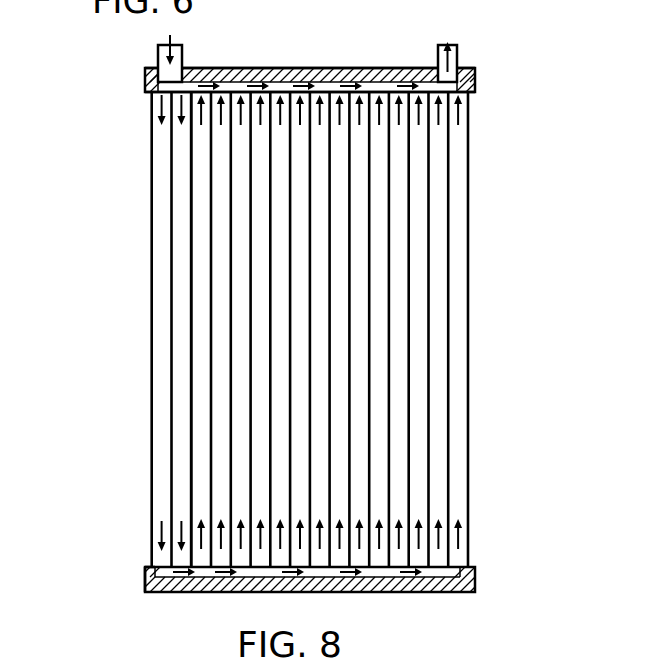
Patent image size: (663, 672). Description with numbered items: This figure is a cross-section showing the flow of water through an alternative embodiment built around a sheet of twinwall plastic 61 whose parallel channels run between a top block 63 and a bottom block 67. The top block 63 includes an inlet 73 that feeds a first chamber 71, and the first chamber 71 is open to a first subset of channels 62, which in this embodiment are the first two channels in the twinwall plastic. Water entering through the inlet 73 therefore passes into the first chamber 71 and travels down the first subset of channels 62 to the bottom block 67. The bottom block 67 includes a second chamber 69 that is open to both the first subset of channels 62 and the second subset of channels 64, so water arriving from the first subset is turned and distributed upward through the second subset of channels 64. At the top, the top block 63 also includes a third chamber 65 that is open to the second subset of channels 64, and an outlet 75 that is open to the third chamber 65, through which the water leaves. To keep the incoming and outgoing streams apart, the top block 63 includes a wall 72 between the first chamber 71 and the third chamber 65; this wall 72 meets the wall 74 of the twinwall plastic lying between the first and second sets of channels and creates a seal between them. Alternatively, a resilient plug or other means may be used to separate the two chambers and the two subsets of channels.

The heat exchanger tube panel 61 is at (454, 184).
The first subset of channels 62 is at (150, 306).
The top block 63 is at (476, 79).
The second subset of channels 64 is at (470, 330).
The third chamber 65 is at (383, 90).
The bottom block 67 is at (476, 575).
The second chamber 69 is at (157, 573).
The first chamber 71 is at (150, 93).
The wall 72 is at (218, 68).
The inlet 73 is at (157, 62).
The wall of the twinwall plastic 74 is at (190, 117).
The outlet 75 is at (458, 60).